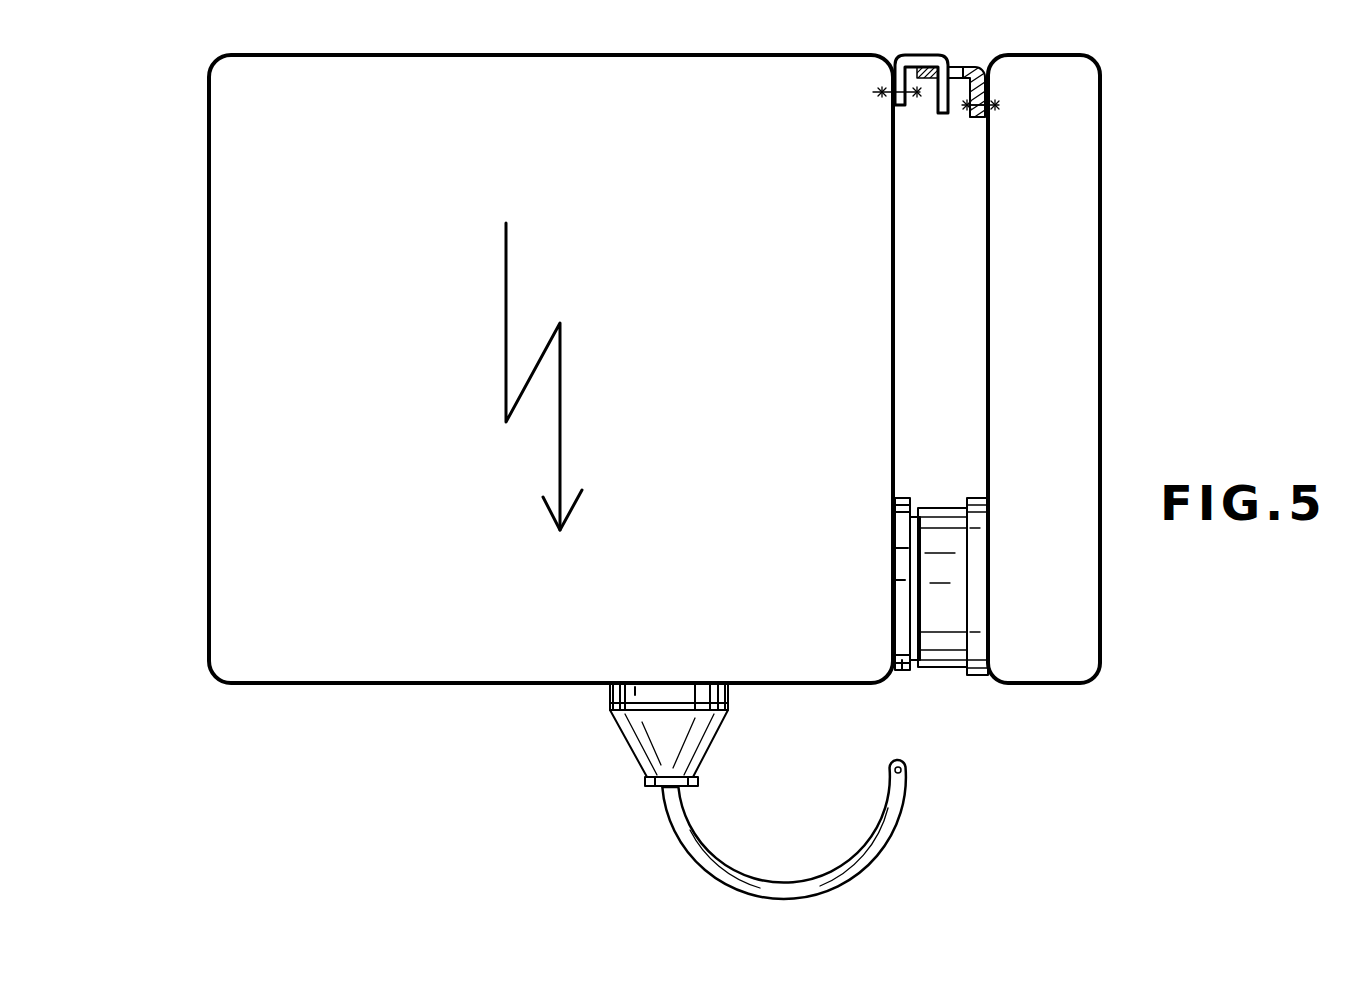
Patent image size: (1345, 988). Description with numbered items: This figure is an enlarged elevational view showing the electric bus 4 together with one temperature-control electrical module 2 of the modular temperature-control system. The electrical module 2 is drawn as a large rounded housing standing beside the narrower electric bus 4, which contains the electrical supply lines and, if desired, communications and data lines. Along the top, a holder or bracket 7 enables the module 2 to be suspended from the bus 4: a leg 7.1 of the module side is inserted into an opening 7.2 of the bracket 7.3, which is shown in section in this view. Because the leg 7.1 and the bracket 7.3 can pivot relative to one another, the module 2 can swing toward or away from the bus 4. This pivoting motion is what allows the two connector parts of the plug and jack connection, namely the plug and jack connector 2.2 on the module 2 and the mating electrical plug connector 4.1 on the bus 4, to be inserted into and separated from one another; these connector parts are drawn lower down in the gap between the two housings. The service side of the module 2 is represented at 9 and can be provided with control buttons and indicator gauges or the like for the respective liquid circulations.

The temperature-control electrical module 2 is at (324, 652).
The plug and jack connector 2.2 is at (901, 673).
The electric bus 4 is at (1082, 343).
The mating electrical plug connector 4.1 is at (938, 518).
The holder or bracket 7 is at (960, 58).
The leg 7.1 is at (938, 114).
The opening 7.2 is at (963, 65).
The bracket 7.3 is at (976, 118).
The service side 9 is at (178, 371).